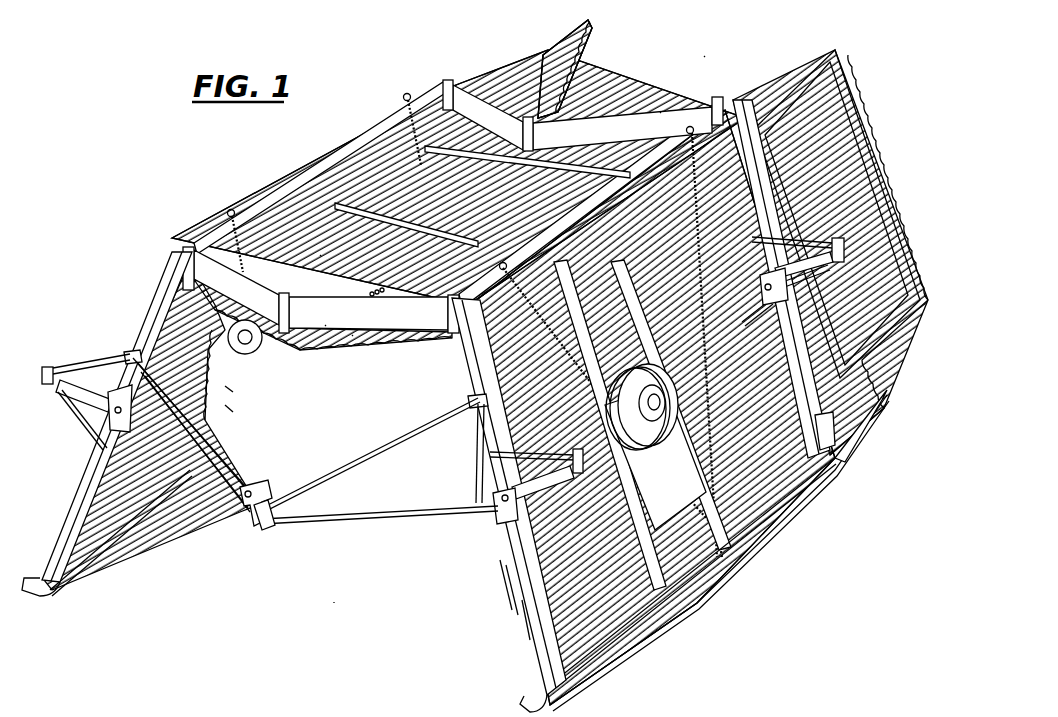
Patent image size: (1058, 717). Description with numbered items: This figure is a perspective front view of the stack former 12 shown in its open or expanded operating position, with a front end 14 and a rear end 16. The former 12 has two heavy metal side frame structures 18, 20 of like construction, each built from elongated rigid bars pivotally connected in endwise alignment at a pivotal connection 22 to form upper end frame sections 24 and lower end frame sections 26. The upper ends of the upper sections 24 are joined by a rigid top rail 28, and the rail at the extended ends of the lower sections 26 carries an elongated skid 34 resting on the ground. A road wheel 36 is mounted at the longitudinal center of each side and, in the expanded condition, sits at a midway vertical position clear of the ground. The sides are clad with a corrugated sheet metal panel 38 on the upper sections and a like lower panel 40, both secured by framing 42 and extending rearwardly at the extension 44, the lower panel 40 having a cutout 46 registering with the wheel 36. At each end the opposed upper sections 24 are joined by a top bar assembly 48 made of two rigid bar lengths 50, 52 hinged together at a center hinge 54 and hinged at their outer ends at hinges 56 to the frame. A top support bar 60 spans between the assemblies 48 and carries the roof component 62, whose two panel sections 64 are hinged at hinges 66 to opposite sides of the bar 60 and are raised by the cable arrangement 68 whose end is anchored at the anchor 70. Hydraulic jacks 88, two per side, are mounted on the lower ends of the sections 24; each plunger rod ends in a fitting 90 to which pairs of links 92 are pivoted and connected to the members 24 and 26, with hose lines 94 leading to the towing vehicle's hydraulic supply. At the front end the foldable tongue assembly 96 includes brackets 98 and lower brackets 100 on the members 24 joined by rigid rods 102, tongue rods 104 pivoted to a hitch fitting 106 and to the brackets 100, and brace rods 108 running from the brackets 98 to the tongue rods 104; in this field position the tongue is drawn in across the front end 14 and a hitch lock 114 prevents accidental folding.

The stack former 12 is at (186, 216).
The front end 14 is at (334, 601).
The rear end 16 is at (704, 56).
The side frame structure 18 is at (457, 382).
The side frame structure 20 is at (513, 583).
The pivotal connection 22 is at (110, 418).
The upper end frame section 24 is at (158, 298).
The lower end frame section 26 is at (72, 510).
The top rail 28 is at (360, 135).
The skid 34 is at (115, 550).
The road wheel 36 is at (240, 342).
The corrugated sheet metal panel 38 is at (555, 50).
The lower panel 40 is at (800, 487).
The framing 42 is at (740, 533).
The rearward extension 44 is at (858, 78).
The cutout 46 is at (666, 508).
The top bar assembly 48 is at (446, 222).
The rigid bar length 50 is at (483, 95).
The rigid bar length 52 is at (658, 112).
The hinge 54 is at (535, 133).
The hinge 56 is at (455, 82).
The top support bar 60 is at (352, 335).
The roof component 62 is at (320, 255).
The panel section 64 is at (372, 200).
The hinge 66 is at (376, 297).
The cable arrangement 68 is at (405, 97).
The cable anchor 70 is at (722, 558).
The hydraulic jack 88 is at (76, 402).
The fitting 90 is at (47, 367).
The link 92 is at (97, 380).
The hose line 94 is at (60, 368).
The tongue assembly 96 is at (312, 522).
The bracket 98 is at (128, 352).
The bracket 100 is at (224, 408).
The rigid rod 102 is at (225, 388).
The tongue rod 104 is at (212, 498).
The hitch fitting 106 is at (256, 530).
The brace rod 108 is at (240, 480).
The hitch lock 114 is at (250, 490).